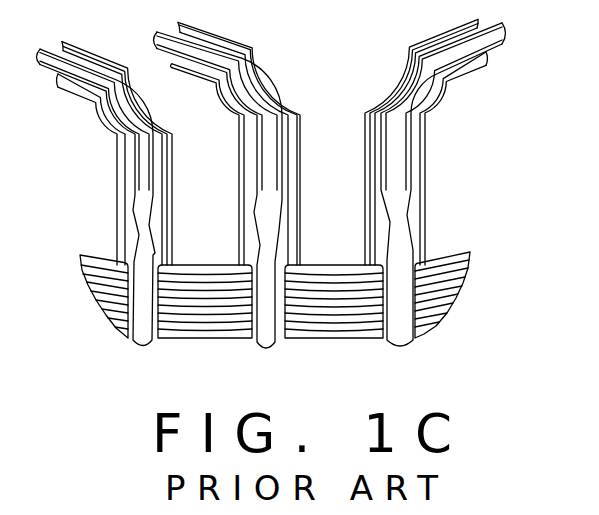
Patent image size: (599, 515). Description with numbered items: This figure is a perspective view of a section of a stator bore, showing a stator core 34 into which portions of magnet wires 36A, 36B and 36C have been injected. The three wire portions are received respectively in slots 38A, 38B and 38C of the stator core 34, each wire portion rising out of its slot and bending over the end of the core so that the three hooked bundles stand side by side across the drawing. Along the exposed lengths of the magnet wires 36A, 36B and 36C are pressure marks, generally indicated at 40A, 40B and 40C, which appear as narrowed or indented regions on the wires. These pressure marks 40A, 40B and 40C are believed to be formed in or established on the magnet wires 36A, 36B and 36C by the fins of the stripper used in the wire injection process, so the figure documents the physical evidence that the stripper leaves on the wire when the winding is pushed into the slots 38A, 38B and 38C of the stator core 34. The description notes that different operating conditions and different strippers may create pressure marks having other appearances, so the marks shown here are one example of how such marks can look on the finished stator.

The stator core 34 is at (460, 251).
The magnet wire 36A is at (428, 162).
The magnet wire 36B is at (298, 138).
The magnet wire 36C is at (175, 169).
The slot 38A is at (422, 233).
The slot 38B is at (285, 268).
The slot 38C is at (163, 262).
The pressure marks 40A is at (392, 218).
The pressure marks 40B is at (268, 219).
The pressure marks 40C is at (136, 229).